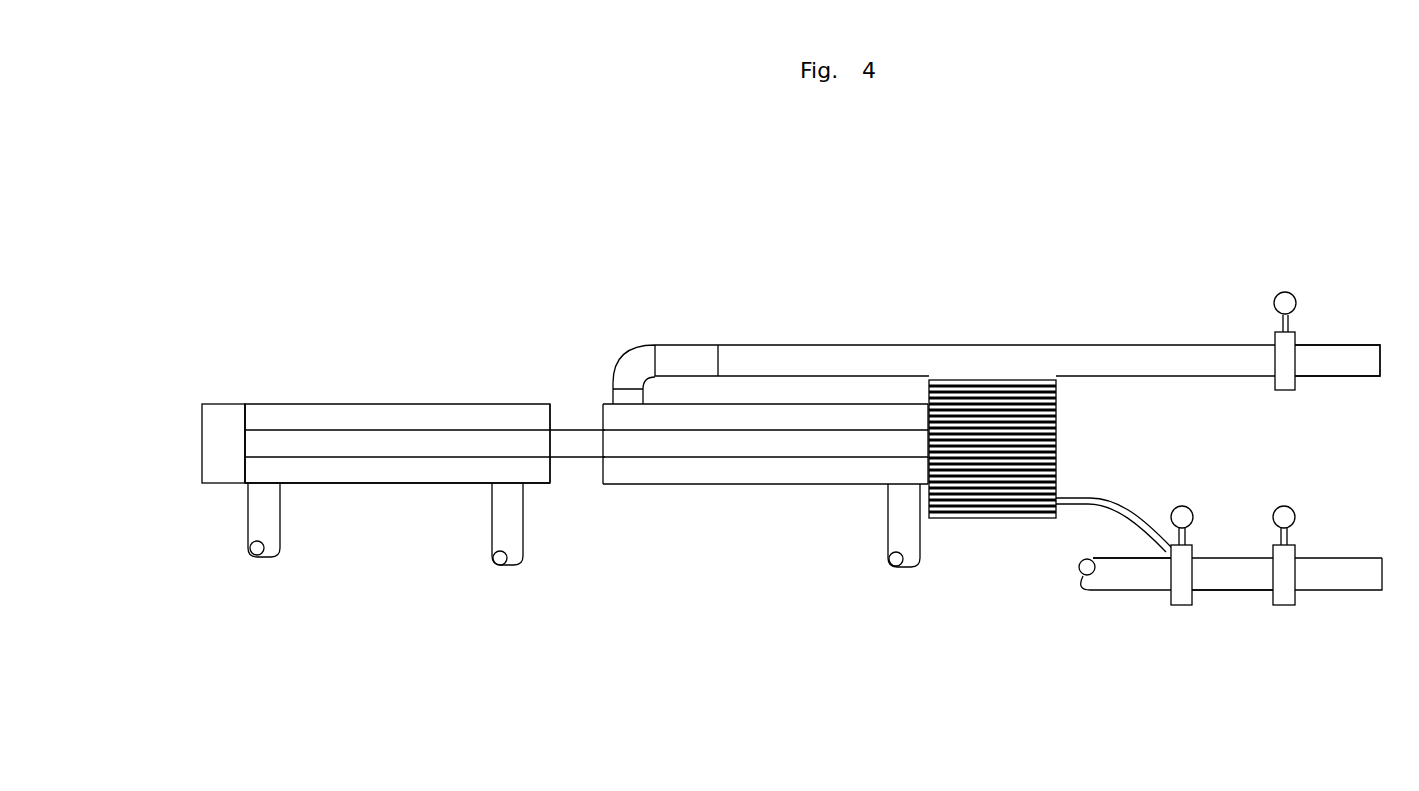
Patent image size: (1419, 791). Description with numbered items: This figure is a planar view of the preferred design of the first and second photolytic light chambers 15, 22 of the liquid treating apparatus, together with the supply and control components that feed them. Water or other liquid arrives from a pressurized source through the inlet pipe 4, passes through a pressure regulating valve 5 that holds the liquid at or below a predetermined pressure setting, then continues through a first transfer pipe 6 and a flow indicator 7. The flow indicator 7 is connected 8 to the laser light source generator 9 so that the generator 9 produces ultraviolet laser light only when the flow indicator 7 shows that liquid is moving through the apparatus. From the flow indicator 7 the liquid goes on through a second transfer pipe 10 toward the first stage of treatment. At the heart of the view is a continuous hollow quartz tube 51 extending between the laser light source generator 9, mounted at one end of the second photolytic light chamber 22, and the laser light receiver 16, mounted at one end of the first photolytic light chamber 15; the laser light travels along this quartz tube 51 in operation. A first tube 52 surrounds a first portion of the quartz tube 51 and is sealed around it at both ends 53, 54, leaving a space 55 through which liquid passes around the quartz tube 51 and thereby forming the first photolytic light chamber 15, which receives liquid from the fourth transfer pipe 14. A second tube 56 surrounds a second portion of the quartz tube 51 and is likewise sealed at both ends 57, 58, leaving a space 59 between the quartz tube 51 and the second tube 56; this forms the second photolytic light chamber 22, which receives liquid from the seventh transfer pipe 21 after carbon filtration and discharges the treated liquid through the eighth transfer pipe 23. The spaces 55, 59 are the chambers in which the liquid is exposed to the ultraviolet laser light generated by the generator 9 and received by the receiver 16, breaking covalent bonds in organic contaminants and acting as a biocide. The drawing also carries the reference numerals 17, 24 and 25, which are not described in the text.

The inlet pipe 4 is at (1340, 590).
The pressure regulating valve 5 is at (1300, 542).
The first transfer pipe 6 is at (1232, 590).
The flow indicator 7 is at (1198, 542).
The connection 8 is at (1142, 505).
The laser light source generator 9 is at (1060, 443).
The second transfer pipe 10 is at (1130, 592).
The fourth transfer pipe 14 is at (242, 553).
The first photolytic laser chamber 15 is at (375, 167).
The laser light receiver 16 is at (200, 440).
The support leg 17 is at (490, 523).
The seventh transfer pipe 21 is at (887, 522).
The second photolytic laser chamber 22 is at (695, 402).
The eighth transfer pipe 23 is at (790, 353).
The valve 24 is at (1268, 328).
The return pipe outlet 25 is at (1352, 350).
The continuous hollow quartz tube 51 is at (473, 425).
The first tube 52 is at (377, 402).
The first end seal of first tube 53 is at (247, 425).
The second end seal of first tube 54 is at (552, 425).
The space 55 is at (357, 470).
The second tube 56 is at (688, 483).
The first seal of second tube 57 is at (600, 462).
The second seal of second tube 58 is at (930, 420).
The space 59 is at (773, 465).